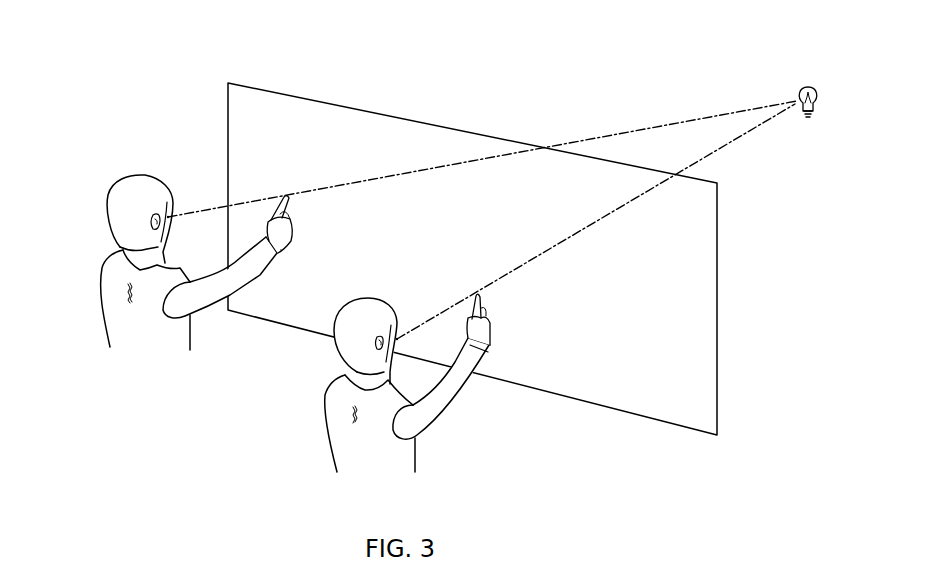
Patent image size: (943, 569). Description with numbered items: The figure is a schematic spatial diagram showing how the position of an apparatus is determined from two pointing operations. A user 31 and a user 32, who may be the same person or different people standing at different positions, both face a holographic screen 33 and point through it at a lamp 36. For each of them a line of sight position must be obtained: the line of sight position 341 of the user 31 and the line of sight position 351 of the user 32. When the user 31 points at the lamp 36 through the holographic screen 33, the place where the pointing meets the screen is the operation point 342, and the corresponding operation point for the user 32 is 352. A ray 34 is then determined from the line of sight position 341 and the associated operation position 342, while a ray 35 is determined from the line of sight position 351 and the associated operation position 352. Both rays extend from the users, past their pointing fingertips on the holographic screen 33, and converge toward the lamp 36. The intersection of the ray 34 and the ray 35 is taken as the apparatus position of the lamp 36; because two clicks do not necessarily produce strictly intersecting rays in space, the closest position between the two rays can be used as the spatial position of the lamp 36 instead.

The user 31 is at (167, 262).
The user 32 is at (379, 368).
The holographic screen 33 is at (228, 110).
The ray 34 is at (388, 177).
The ray 35 is at (535, 258).
The lamp 36 is at (801, 90).
The line of sight position 341 is at (169, 218).
The operation point 342 is at (286, 196).
The line of sight position 351 is at (399, 340).
The operation point 352 is at (476, 291).